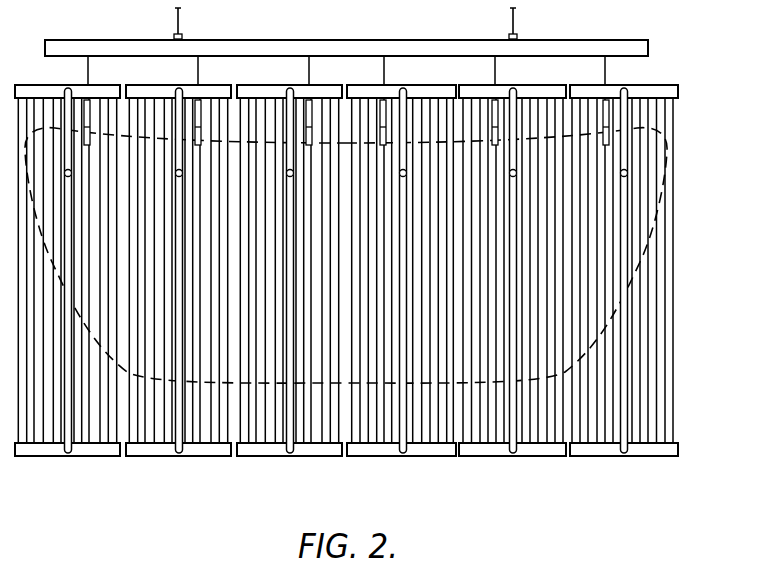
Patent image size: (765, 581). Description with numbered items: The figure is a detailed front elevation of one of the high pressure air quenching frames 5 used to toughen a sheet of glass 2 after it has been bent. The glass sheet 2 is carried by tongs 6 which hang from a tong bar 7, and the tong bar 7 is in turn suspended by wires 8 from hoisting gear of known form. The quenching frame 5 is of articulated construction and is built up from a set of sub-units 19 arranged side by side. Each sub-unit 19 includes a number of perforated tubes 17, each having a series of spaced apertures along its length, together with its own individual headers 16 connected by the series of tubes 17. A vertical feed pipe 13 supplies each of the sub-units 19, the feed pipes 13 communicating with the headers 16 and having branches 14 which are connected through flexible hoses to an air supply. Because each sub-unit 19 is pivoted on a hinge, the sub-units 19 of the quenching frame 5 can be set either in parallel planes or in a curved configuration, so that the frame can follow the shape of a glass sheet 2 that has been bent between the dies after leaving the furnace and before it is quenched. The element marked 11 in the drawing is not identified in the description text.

The sheet of glass 2 is at (657, 217).
The air quenching frame 5 is at (674, 355).
The tong 6 is at (201, 120).
The tong bar 7 is at (359, 47).
The wire 8 is at (182, 14).
The tube 11 is at (654, 262).
The vertical feed pipe 13 is at (402, 456).
The branch 14 is at (630, 178).
The header 16 is at (421, 91).
The perforated tube 17 is at (450, 423).
The sub-unit 19 is at (87, 449).